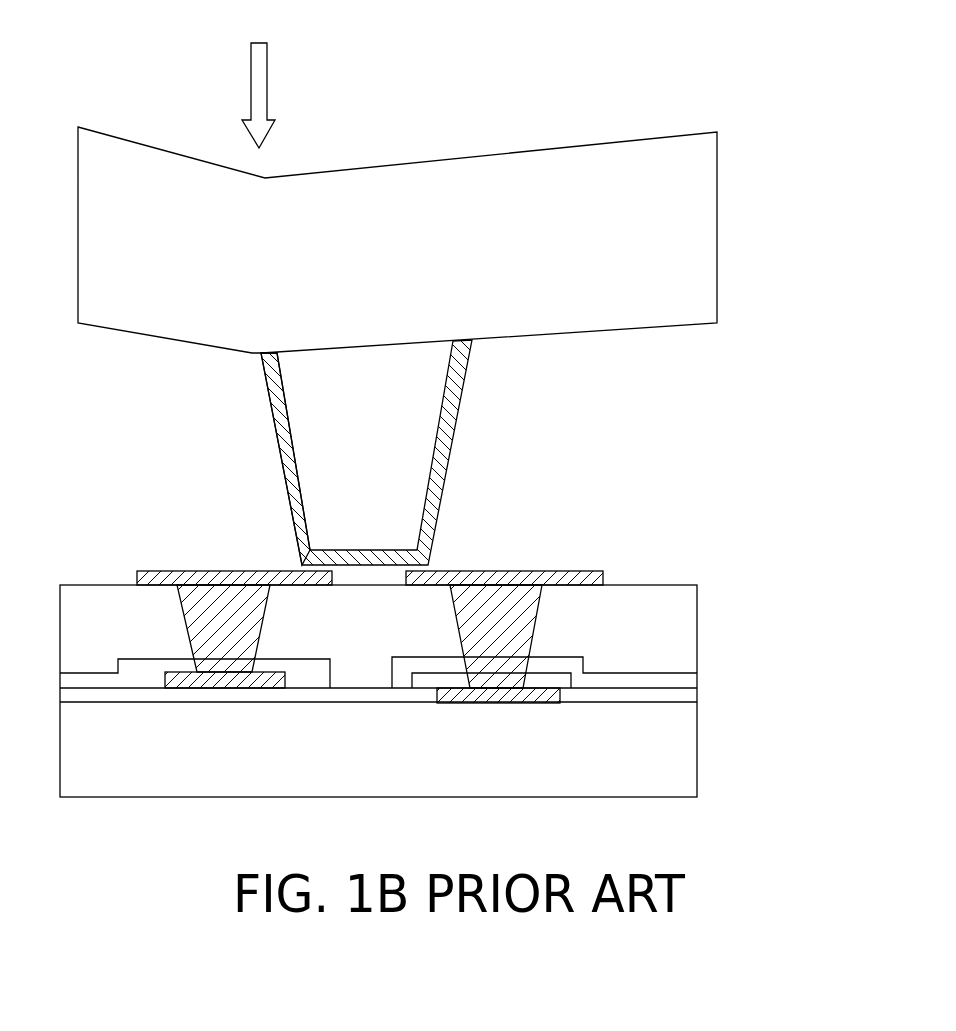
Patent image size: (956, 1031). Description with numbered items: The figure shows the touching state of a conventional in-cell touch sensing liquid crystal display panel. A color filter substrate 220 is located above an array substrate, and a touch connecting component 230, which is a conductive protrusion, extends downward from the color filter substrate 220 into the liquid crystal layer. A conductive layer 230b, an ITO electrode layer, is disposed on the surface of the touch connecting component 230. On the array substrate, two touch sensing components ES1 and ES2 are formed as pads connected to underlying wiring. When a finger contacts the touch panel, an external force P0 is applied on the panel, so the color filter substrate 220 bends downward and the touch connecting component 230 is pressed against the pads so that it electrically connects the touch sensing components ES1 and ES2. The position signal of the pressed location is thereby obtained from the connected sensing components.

The external force P0 is at (258, 76).
The color filter substrate 220 is at (717, 265).
The touch connecting component 230 is at (528, 472).
The conductive layer 230b is at (286, 478).
The touch sensing component ES1 is at (547, 572).
The touch sensing component ES2 is at (153, 572).